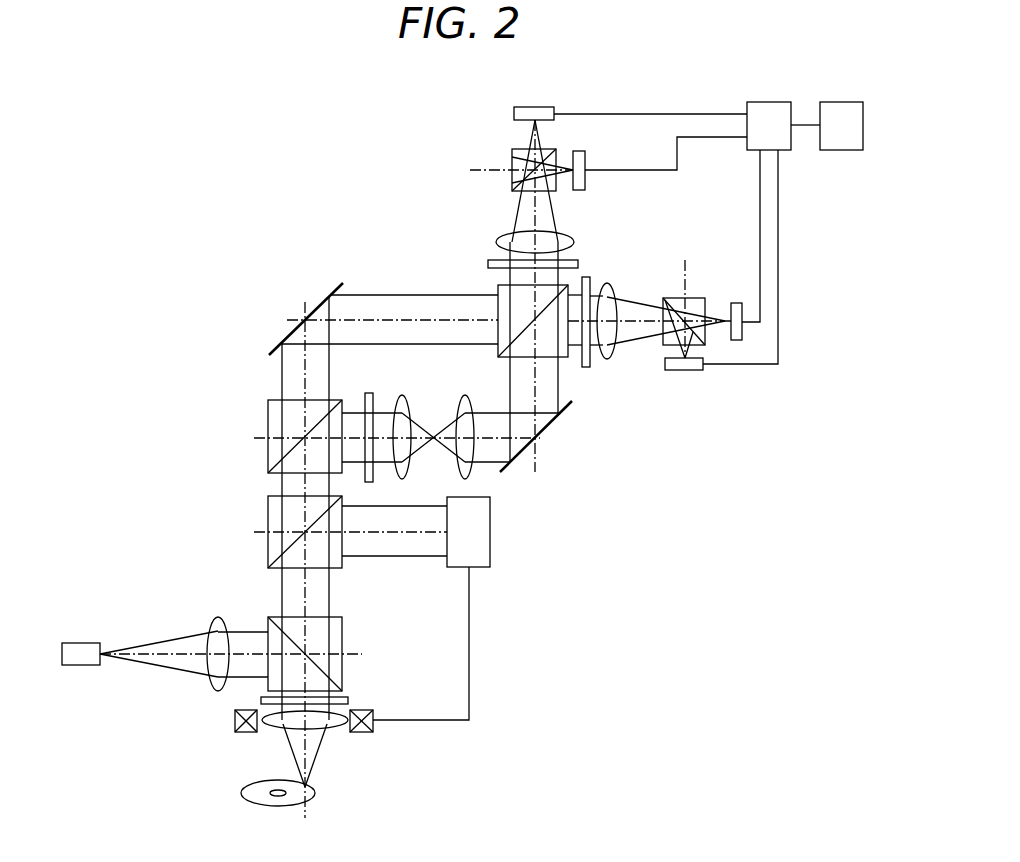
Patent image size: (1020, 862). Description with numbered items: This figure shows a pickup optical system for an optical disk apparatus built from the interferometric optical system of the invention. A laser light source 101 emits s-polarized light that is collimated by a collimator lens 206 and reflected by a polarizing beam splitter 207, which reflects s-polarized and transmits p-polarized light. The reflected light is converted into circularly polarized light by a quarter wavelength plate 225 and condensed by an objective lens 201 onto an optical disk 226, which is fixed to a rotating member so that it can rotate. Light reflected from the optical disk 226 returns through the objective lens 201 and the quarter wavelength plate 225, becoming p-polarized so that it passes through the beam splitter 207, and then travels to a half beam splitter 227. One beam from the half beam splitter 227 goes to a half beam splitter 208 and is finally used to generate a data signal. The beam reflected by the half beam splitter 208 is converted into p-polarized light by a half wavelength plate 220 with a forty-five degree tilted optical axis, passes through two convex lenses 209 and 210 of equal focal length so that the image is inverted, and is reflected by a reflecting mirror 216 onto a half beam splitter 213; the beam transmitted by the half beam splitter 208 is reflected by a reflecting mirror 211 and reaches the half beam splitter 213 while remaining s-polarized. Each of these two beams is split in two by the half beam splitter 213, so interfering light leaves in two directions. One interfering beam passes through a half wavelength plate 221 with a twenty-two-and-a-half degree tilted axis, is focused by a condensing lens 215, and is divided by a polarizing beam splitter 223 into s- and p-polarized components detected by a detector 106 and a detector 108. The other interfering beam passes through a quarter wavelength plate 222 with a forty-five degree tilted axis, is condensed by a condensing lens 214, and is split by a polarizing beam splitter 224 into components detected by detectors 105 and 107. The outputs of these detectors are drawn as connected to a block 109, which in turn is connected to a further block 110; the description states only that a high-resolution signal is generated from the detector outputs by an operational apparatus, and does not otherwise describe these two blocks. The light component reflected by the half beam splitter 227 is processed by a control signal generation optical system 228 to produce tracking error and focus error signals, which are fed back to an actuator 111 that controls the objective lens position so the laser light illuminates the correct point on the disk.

The laser light source 101 is at (84, 643).
The detector 105 is at (514, 113).
The detector 106 is at (734, 303).
The detector 107 is at (585, 158).
The detector 108 is at (686, 370).
The signal processing circuit 109 is at (766, 102).
The controller 110 is at (842, 102).
The actuator 111 is at (235, 721).
The objective lens 201 is at (273, 730).
The collimator lens 206 is at (216, 618).
The polarizing beam splitter 207 is at (342, 626).
The half beam splitter 208 is at (268, 412).
The convex lens 209 is at (404, 396).
The convex lens 210 is at (466, 396).
The reflecting mirror 211 is at (284, 336).
The half beam splitter 213 is at (498, 292).
The condensing lens 214 is at (496, 240).
The condensing lens 215 is at (607, 286).
The reflecting mirror 216 is at (543, 432).
The half wavelength plate 220 is at (368, 393).
The half wavelength plate 221 is at (586, 277).
The quarter wavelength plate 222 is at (488, 263).
The polarizing beam splitter 223 is at (666, 298).
The polarizing beam splitter 224 is at (512, 160).
The quarter wavelength plate 225 is at (348, 700).
The optical disk 226 is at (242, 797).
The half beam splitter 227 is at (268, 514).
The control signal generation optical system 228 is at (490, 524).